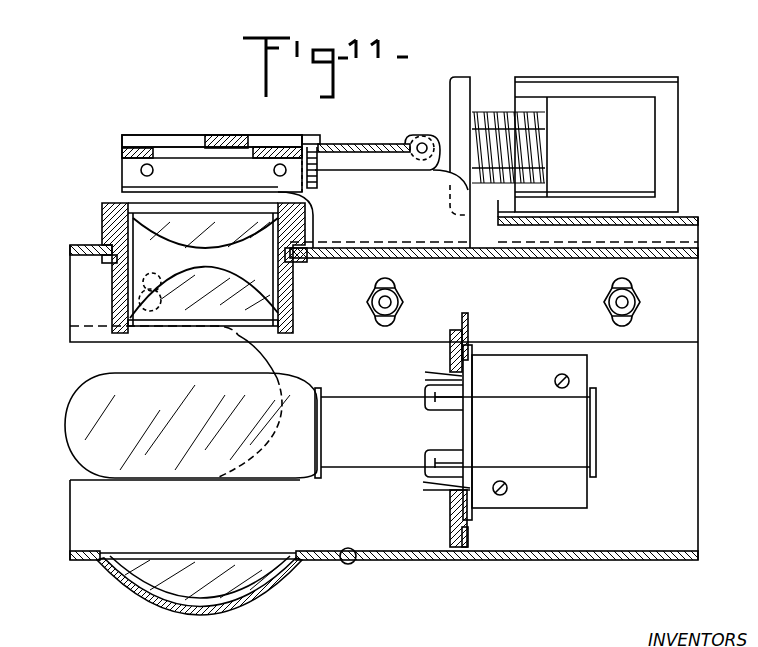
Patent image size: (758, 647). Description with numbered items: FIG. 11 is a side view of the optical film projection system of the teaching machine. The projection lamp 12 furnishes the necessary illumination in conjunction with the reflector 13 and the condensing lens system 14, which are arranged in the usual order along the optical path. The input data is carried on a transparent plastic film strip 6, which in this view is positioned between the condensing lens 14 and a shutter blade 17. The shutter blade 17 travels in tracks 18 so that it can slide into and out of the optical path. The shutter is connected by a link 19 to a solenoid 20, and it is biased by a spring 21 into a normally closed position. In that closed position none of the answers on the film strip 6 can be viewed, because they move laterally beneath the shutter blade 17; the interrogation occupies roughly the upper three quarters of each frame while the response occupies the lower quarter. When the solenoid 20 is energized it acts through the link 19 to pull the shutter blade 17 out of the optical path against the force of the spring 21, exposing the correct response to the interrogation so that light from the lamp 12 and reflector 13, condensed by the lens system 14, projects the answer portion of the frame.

The transparent plastic strip 6 is at (132, 158).
The projection lamp 12 is at (78, 437).
The reflector 13 is at (143, 598).
The condensing lens system 14 is at (107, 213).
The shutter blade 17 is at (230, 141).
The tracks 18 is at (138, 148).
The link 19 is at (360, 147).
The solenoid 20 is at (623, 116).
The spring 21 is at (486, 113).